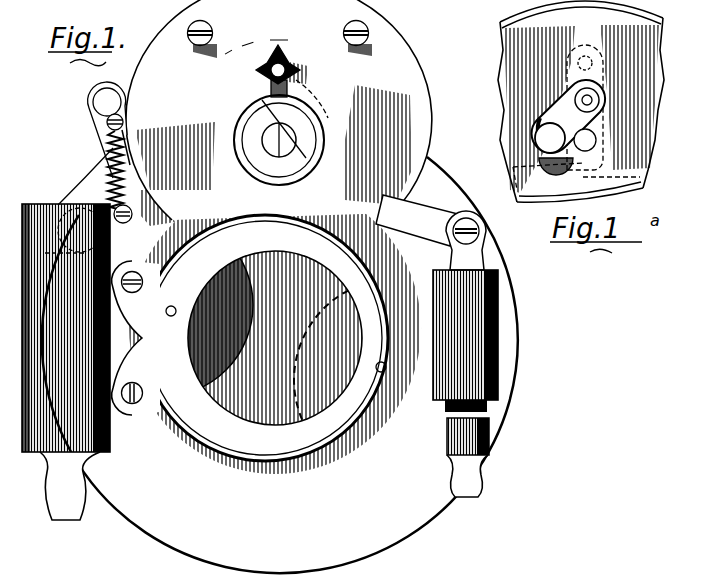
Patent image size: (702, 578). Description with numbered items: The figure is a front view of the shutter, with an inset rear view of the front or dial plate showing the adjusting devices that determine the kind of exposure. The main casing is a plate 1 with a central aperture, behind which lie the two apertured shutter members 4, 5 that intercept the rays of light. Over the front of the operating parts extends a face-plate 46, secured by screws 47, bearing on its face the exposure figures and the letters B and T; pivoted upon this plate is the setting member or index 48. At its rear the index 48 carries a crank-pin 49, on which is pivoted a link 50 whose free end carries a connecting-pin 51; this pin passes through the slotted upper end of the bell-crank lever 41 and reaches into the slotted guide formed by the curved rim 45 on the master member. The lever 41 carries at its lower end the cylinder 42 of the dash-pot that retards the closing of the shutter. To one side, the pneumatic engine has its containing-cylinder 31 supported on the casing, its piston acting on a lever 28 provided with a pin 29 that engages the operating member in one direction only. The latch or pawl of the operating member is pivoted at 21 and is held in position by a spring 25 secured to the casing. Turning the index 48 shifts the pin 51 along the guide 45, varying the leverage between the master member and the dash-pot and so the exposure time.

In FIG. 1, the plate 1 is at (198, 490).
In FIG. 1, the shutter member 4 is at (161, 305).
In FIG. 1, the shutter member 5 is at (389, 380).
In FIG. 1, the pivot 21 is at (94, 104).
In FIG. 1, the spring 25 is at (107, 146).
In FIG. 1, the lever 28 is at (88, 188).
In FIG. 1, the pin or stud 29 is at (127, 152).
In FIG. 1, the containing-cylinder 31 is at (66, 362).
In FIG. 1, the bell-crank lever 41 is at (415, 197).
In FIG. 1A, the bell-crank lever 41 is at (572, 166).
In FIG. 1, the cylinder 42 is at (465, 305).
In FIG. 1, the curved rim 45 is at (442, 408).
In FIG. 1, the face-plate 46 is at (279, 110).
In FIG. 1A, the face-plate 46 is at (581, 101).
In FIG. 1, the screws 47 is at (210, 23).
In FIG. 1, the arm or index 48 is at (262, 101).
In FIG. 1A, the crank-pin 49 is at (548, 136).
In FIG. 1A, the link 50 is at (582, 99).
In FIG. 1A, the connecting-pin 51 is at (600, 102).